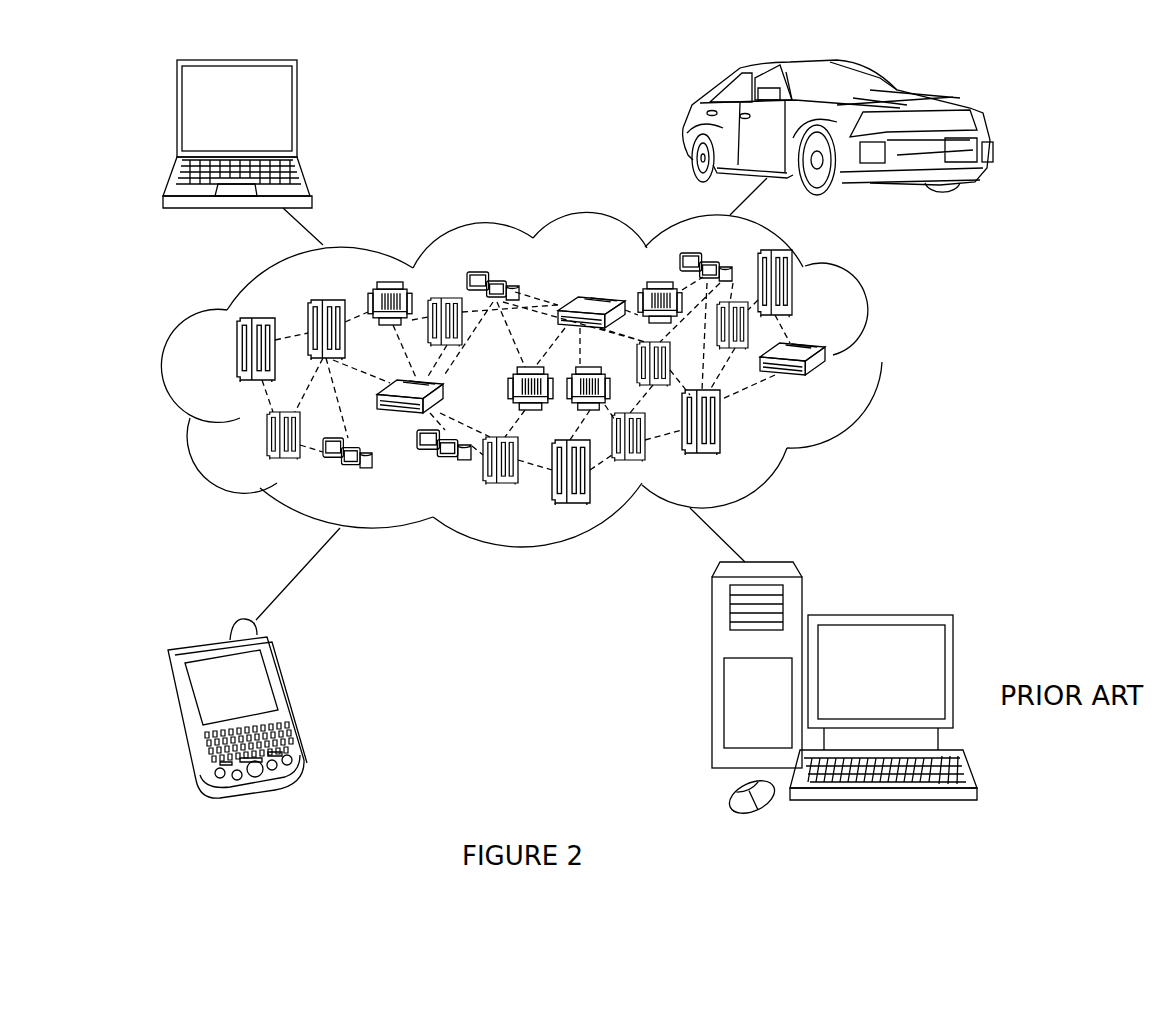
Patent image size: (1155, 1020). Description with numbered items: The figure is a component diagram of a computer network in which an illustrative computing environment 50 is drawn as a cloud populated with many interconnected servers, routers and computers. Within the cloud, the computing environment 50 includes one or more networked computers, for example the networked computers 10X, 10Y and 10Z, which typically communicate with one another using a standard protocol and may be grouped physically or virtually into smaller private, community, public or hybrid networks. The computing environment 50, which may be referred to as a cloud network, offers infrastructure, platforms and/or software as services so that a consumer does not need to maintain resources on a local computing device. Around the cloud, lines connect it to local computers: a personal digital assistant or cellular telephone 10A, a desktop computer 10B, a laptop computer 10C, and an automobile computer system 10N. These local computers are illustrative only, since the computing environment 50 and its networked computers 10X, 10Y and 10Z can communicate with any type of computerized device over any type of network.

The personal digital assistant or cellular telephone 10A is at (288, 698).
The desktop computer 10B is at (887, 602).
The laptop computer 10C is at (298, 115).
The automobile computer system 10N is at (683, 118).
The networked computer 10X is at (827, 385).
The networked computer 10Y is at (233, 347).
The networked computer 10Z is at (257, 445).
The computing environment 50 is at (882, 356).